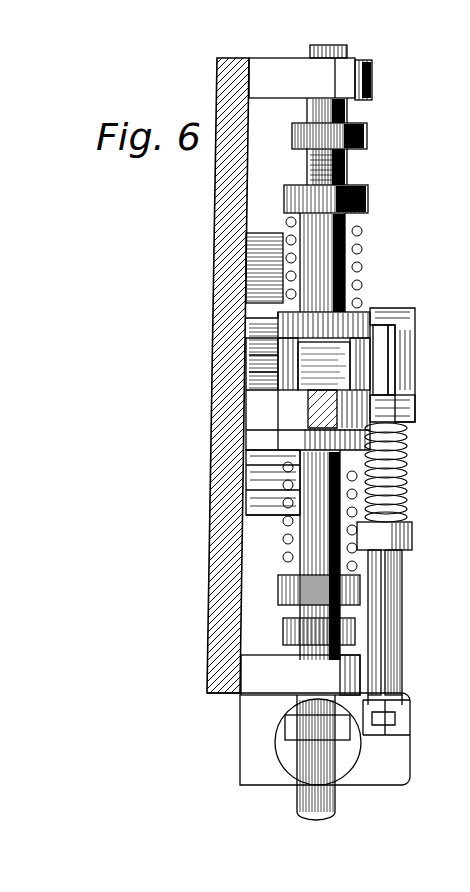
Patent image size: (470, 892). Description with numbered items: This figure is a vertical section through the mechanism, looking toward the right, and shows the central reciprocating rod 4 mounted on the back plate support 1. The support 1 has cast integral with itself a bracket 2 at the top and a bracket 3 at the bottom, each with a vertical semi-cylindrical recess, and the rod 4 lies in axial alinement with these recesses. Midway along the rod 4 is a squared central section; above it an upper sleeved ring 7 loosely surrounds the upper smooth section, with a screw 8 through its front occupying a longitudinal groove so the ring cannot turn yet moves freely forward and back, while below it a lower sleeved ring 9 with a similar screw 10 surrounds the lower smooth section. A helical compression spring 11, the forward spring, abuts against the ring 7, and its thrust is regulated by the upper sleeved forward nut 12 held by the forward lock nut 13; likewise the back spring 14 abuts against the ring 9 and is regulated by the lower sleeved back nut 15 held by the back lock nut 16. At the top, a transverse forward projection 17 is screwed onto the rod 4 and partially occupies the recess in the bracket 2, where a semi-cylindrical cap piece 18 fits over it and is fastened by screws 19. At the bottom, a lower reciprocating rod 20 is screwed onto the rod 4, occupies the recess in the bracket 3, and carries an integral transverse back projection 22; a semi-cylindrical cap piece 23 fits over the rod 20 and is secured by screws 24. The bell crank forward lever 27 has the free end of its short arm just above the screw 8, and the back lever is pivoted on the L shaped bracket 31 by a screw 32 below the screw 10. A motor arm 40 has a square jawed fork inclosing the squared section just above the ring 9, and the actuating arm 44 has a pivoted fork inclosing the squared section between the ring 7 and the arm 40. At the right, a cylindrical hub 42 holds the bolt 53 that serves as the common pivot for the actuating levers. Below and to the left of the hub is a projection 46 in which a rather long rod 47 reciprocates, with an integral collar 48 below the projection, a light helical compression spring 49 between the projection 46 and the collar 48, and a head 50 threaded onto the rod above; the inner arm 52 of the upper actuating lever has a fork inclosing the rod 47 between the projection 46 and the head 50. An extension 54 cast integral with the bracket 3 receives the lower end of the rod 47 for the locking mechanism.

The back plate support 1 is at (232, 89).
The bracket 2 is at (282, 75).
The semi-cylindrical cap piece 18 is at (345, 70).
The screws 19 is at (372, 70).
The transverse forward projection 17 is at (368, 133).
The forward lock nut 13 is at (288, 190).
The upper sleeved forward nut 12 is at (290, 205).
The helical compression spring 11 is at (286, 218).
The bell crank forward lever 27 is at (214, 266).
The upper sleeved ring 7 is at (213, 316).
The screw 8 is at (213, 329).
The cylindrical hub 42 is at (213, 348).
The actuating arm 44 is at (213, 360).
The motor arm 40 is at (212, 404).
The lower sleeved ring 9 is at (212, 428).
The screw 10 is at (211, 450).
The screw 32 is at (210, 500).
The helical compression spring 14 is at (284, 548).
The lower sleeved back nut 15 is at (290, 585).
The back lock nut 16 is at (285, 625).
The transverse back projection 22 is at (292, 645).
The bracket 3 is at (268, 680).
The L shaped bracket 31 is at (290, 740).
The extension 54 is at (292, 778).
The lower reciprocating rod 20 is at (300, 805).
The bolt 53 is at (368, 712).
The central reciprocating rod 4 is at (348, 342).
The head 50 is at (394, 312).
The inner arm 52 is at (404, 346).
The projection 46 is at (415, 405).
The light helical compression spring 49 is at (405, 480).
The integral collar 48 is at (403, 548).
The rod 47 is at (402, 612).
The semi-cylindrical cap piece 23 is at (380, 650).
The screws 24 is at (385, 690).